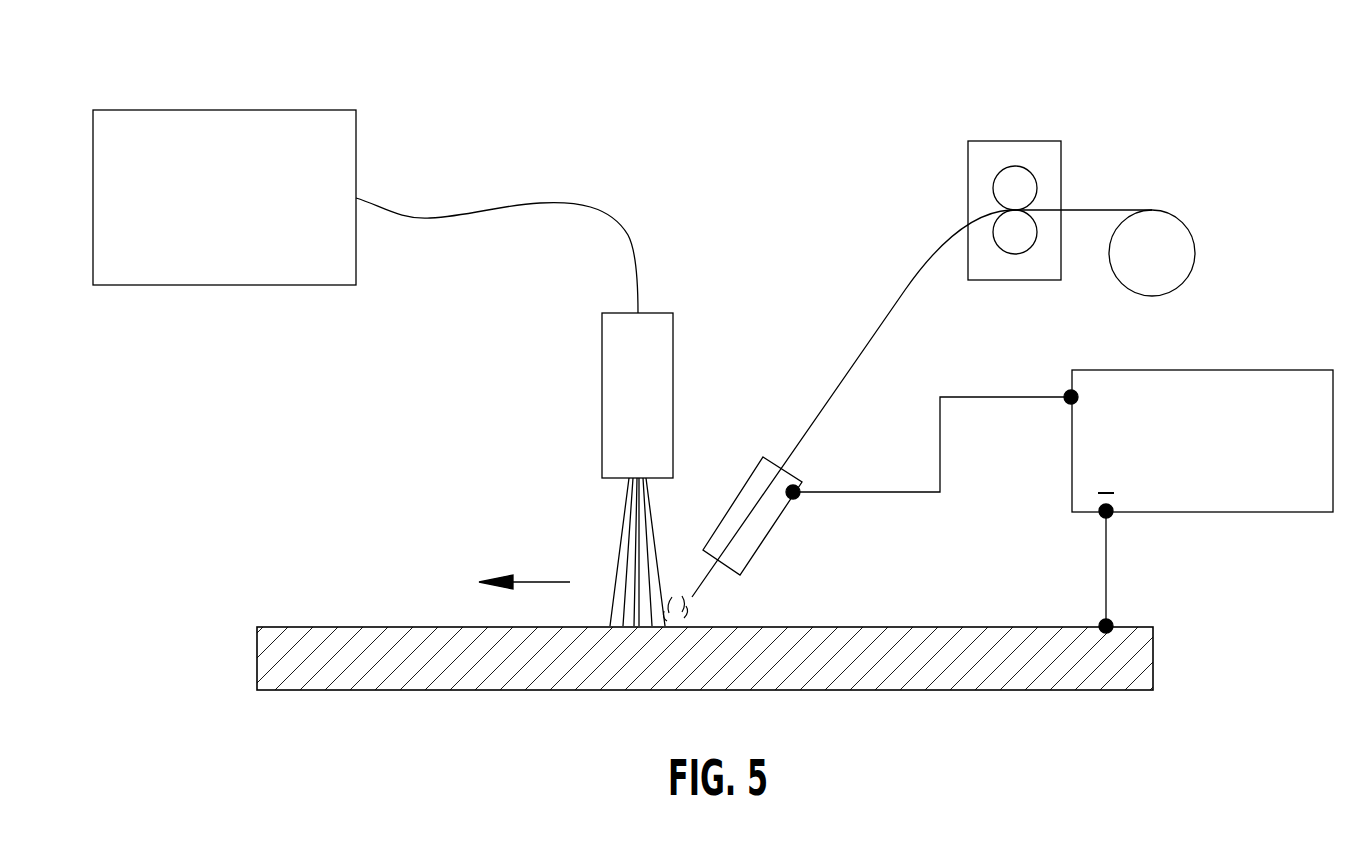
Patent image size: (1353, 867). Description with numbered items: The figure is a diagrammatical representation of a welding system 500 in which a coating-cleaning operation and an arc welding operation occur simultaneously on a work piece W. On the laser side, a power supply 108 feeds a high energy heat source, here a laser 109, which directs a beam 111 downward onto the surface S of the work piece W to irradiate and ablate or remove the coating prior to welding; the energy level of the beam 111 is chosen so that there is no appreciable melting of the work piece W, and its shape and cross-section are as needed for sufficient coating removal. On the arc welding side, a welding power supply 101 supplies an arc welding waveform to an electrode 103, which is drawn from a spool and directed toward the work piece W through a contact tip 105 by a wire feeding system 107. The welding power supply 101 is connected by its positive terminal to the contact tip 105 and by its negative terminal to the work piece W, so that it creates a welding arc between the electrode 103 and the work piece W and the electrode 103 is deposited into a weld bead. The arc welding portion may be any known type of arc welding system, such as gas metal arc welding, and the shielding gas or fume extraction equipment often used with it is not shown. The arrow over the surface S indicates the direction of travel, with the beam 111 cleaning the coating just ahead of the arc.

The welding system 500 is at (894, 65).
The power supply 108 is at (162, 110).
The laser 109 is at (602, 377).
The beam 111 is at (632, 529).
The electrode 103 is at (862, 352).
The wire feeding system 107 is at (1028, 168).
The contact tip 105 is at (765, 533).
The welding power supply 101 is at (1213, 512).
The work piece W is at (1033, 690).
The workpiece surface S is at (405, 627).